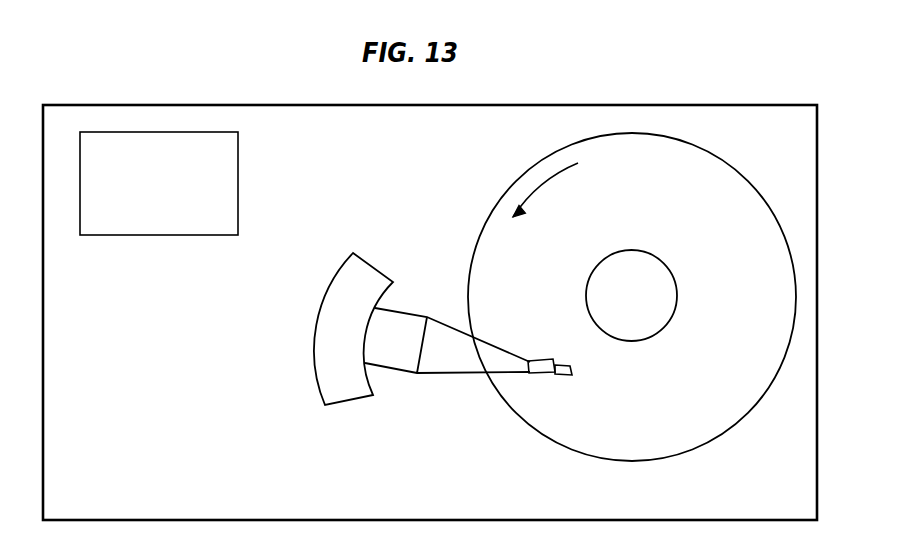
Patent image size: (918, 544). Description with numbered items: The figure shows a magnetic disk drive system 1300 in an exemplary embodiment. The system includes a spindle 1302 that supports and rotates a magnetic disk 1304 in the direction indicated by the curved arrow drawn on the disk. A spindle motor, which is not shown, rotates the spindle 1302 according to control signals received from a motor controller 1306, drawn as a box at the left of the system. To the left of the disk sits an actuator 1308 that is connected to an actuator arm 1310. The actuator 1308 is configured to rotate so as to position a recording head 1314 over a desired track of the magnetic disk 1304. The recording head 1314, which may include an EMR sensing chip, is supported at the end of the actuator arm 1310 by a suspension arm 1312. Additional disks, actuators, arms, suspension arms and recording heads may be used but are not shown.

The magnetic disk drive system 1300 is at (388, 508).
The spindle 1302 is at (677, 300).
The magnetic disk 1304 is at (673, 198).
The motor controller 1306 is at (182, 220).
The actuator 1308 is at (362, 257).
The actuator arm 1310 is at (428, 373).
The suspension arm 1312 is at (540, 357).
The recording head 1314 is at (572, 372).